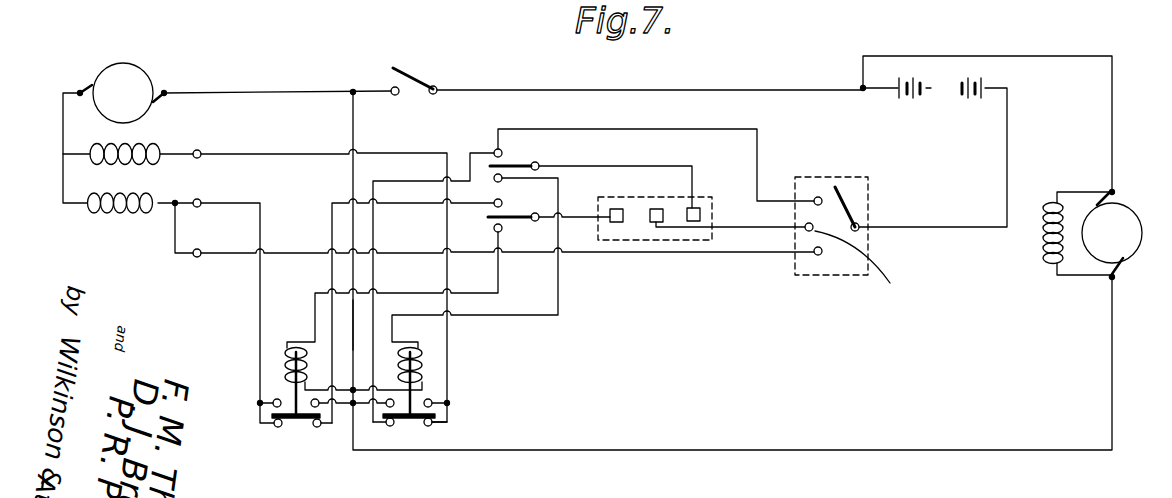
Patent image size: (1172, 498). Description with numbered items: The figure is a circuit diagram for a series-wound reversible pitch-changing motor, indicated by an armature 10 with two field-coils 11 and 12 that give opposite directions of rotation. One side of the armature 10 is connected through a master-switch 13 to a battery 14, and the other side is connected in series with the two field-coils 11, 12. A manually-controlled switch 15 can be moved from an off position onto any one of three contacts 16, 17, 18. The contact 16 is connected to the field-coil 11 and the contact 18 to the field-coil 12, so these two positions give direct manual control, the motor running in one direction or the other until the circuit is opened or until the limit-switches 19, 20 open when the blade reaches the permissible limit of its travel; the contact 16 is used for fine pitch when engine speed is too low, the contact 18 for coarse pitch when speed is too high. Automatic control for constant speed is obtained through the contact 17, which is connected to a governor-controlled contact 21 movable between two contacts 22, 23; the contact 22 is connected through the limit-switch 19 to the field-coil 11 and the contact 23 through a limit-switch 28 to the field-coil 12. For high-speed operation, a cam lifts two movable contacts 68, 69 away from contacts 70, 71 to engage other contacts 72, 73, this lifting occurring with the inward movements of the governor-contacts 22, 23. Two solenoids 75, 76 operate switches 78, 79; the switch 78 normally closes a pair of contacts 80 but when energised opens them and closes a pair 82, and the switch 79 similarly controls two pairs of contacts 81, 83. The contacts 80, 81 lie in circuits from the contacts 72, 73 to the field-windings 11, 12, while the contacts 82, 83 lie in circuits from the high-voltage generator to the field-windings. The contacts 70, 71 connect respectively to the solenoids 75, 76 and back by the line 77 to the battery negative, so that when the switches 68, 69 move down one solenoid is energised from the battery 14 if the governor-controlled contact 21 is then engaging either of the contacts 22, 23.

The armature 10 is at (123, 75).
The field-coil 11 is at (135, 140).
The field-coil 12 is at (118, 213).
The master-switch 13 is at (415, 73).
The battery 14 is at (937, 88).
The manually-controlled switch 15 is at (847, 187).
The contact 16 is at (818, 197).
The contact 17 is at (858, 272).
The contact 18 is at (822, 255).
The limit-switch 19 is at (200, 150).
The limit-switch 20 is at (201, 250).
The governor-controlled contact 21 is at (652, 222).
The contact 22 is at (695, 210).
The contact 23 is at (613, 222).
The limit-switch 28 is at (200, 199).
The movable contact 68 is at (505, 163).
The movable contact 69 is at (517, 213).
The contact 70 is at (495, 175).
The contact 71 is at (495, 229).
The contact 72 is at (500, 150).
The contact 73 is at (495, 205).
The solenoid 75 is at (1102, 247).
The solenoid 76 is at (287, 370).
The line 77 is at (353, 325).
The switch 78 is at (435, 417).
The switch 79 is at (272, 417).
The pair of contacts 80 is at (428, 427).
The pair of contacts 81 is at (307, 427).
The pair of contacts 82 is at (432, 400).
The pair of contacts 83 is at (273, 402).